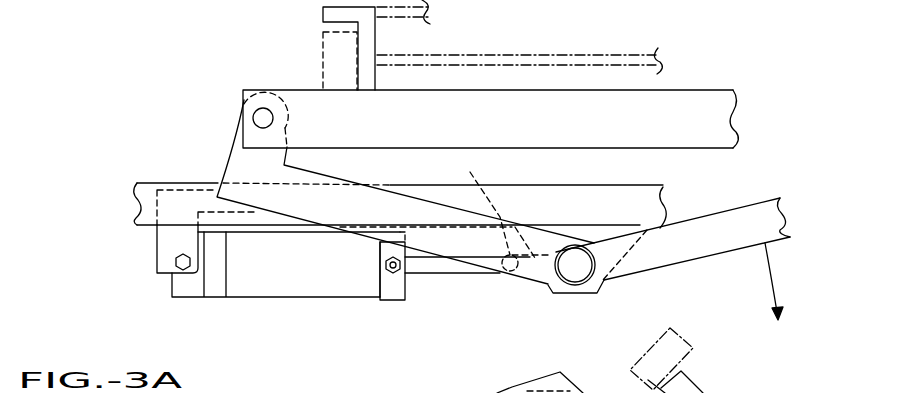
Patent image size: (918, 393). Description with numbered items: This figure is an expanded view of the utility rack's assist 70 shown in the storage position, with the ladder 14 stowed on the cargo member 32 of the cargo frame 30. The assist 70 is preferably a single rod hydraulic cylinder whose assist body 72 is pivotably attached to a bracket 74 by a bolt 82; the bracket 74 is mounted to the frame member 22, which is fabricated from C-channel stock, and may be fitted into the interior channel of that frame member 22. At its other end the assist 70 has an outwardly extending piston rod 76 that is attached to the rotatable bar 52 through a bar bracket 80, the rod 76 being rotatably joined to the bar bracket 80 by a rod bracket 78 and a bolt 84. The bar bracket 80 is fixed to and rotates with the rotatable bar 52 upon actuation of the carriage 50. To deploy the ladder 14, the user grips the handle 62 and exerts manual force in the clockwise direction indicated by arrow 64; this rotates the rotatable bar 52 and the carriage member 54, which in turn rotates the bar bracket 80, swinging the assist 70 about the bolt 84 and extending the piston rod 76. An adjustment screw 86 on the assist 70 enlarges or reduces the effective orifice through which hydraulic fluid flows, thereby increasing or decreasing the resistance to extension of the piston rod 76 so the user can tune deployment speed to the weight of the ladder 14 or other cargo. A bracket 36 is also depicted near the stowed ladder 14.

The ladder 14 is at (323, 40).
The frame member 22 is at (153, 183).
The cargo frame 30 is at (262, 80).
The cargo member 32 is at (707, 150).
The bracket 36 is at (372, 33).
The carriage 50 is at (577, 276).
The rotatable bar 52 is at (255, 114).
The carriage member 54 is at (230, 156).
The handle 62 is at (667, 264).
The arrow 64 is at (772, 292).
The assist 70 is at (256, 302).
The assist body 72 is at (313, 299).
The bracket 74 is at (160, 235).
The piston rod 76 is at (440, 274).
The rod bracket 78 is at (506, 279).
The bar bracket 80 is at (546, 289).
The bolt 82 is at (177, 265).
The bolt 84 is at (493, 219).
The adjustment screw 86 is at (394, 301).